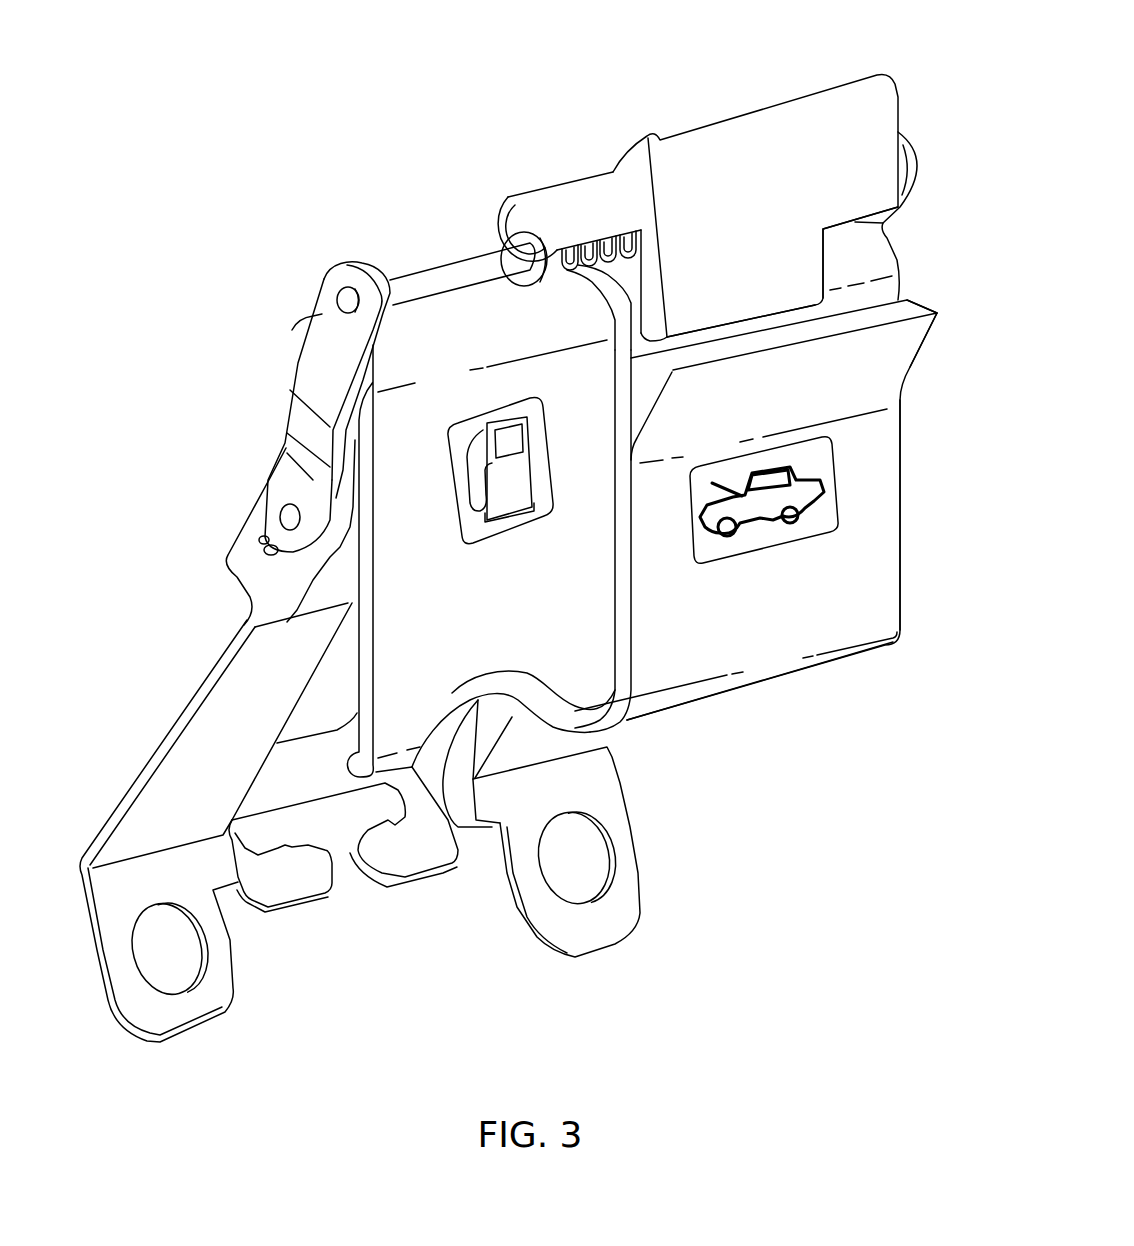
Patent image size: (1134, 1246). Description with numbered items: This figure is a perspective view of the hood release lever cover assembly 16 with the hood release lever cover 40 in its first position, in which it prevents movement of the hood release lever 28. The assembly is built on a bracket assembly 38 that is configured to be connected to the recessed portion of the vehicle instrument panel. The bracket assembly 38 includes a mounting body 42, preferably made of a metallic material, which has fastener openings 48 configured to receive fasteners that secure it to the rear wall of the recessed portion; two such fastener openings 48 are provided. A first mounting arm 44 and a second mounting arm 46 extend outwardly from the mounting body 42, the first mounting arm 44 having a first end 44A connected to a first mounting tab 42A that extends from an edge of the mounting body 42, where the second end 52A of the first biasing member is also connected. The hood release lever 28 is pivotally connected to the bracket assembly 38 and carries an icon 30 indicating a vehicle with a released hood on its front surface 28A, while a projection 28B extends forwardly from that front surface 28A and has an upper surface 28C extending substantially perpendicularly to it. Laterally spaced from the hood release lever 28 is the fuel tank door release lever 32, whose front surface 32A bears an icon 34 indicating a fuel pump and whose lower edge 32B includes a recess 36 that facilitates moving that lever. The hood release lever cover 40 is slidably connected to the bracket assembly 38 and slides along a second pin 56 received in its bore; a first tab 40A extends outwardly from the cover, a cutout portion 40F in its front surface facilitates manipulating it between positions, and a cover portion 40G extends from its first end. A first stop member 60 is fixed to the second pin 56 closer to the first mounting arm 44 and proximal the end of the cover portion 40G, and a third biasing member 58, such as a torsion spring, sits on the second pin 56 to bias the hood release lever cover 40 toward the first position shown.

The hood release lever cover assembly 16 is at (803, 852).
The hood release lever 28 is at (770, 692).
The front surface 28A is at (822, 627).
The projection 28B is at (897, 348).
The upper surface 28C is at (902, 310).
The icon 30 is at (757, 560).
The fuel tank door release lever 32 is at (433, 338).
The front surface 32A is at (600, 684).
The lower edge 32B is at (558, 732).
The icon 34 is at (507, 537).
The recess 36 is at (521, 688).
The bracket assembly 38 is at (167, 718).
The hood release lever cover 40 is at (740, 115).
The first tab 40A is at (720, 300).
The cutout portion 40F is at (852, 222).
The cover portion 40G is at (576, 205).
The mounting body 42 is at (143, 766).
The first mounting tab 42A is at (268, 580).
The first mounting arm 44 is at (300, 366).
The first end 44A is at (278, 513).
The second mounting arm 46 is at (922, 155).
The fastener opening 48 is at (195, 963).
The second end 52A is at (258, 553).
The second pin 56 is at (476, 257).
The third biasing member 58 is at (587, 280).
The first stop member 60 is at (522, 278).